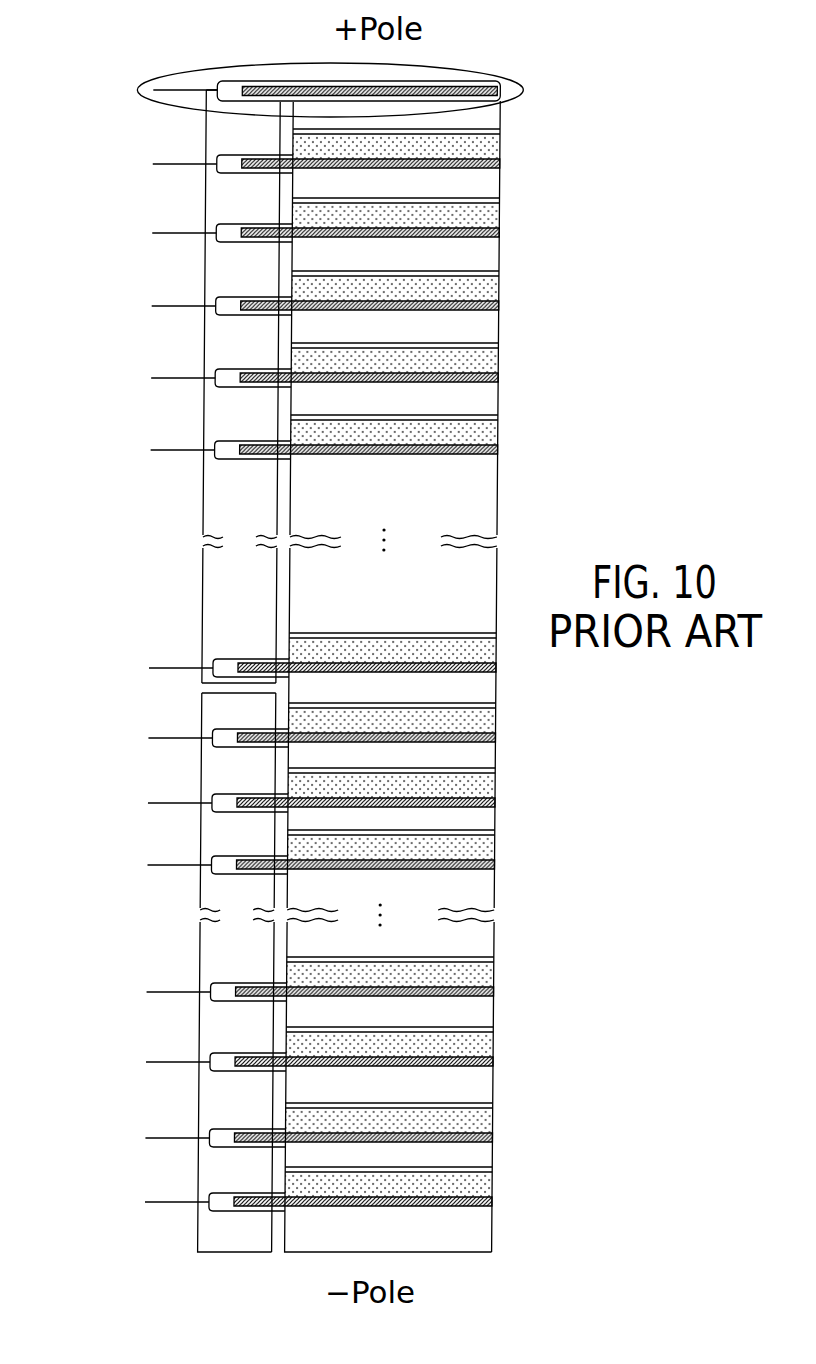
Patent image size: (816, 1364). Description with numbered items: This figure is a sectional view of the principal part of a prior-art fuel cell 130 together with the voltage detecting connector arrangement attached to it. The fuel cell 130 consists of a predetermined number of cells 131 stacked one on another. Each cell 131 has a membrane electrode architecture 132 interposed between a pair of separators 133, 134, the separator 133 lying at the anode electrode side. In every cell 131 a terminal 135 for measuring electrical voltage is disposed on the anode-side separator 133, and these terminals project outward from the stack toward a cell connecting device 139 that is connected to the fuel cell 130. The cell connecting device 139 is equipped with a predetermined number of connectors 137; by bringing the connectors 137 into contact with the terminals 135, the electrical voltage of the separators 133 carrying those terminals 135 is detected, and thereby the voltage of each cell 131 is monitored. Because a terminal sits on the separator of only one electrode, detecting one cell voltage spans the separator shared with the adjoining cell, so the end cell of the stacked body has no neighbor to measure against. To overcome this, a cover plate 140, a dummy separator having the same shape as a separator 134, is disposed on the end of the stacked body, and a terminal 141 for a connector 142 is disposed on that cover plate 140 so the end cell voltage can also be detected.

The fuel cell 130 is at (401, 644).
The cell 131 is at (340, 687).
The membrane electrode architecture 132 is at (500, 160).
The separator 133 is at (483, 128).
The separator 134 is at (472, 172).
The terminal 135 is at (253, 153).
The connector 137 is at (165, 163).
The cell connecting device 139 is at (184, 200).
The cover plate 140 is at (490, 83).
The terminal 141 is at (260, 81).
The connector 142 is at (177, 90).